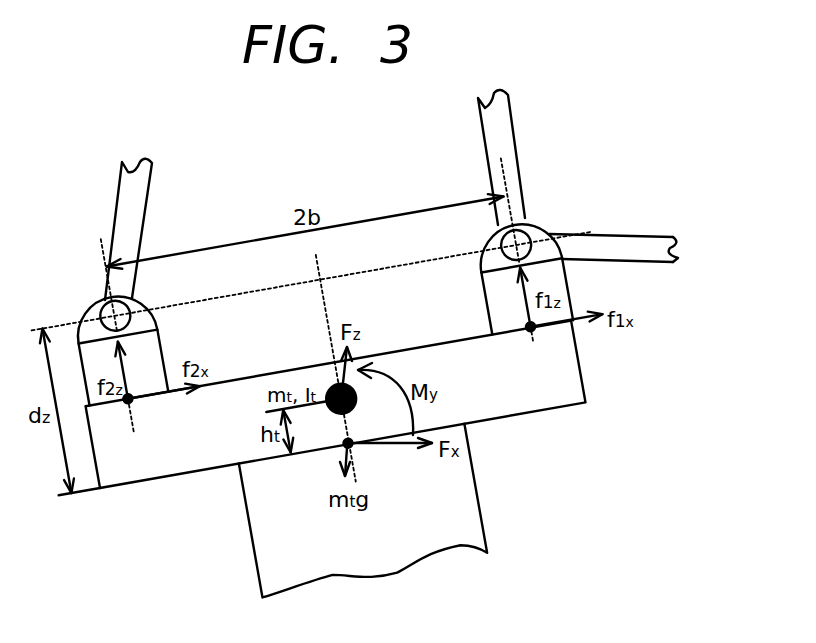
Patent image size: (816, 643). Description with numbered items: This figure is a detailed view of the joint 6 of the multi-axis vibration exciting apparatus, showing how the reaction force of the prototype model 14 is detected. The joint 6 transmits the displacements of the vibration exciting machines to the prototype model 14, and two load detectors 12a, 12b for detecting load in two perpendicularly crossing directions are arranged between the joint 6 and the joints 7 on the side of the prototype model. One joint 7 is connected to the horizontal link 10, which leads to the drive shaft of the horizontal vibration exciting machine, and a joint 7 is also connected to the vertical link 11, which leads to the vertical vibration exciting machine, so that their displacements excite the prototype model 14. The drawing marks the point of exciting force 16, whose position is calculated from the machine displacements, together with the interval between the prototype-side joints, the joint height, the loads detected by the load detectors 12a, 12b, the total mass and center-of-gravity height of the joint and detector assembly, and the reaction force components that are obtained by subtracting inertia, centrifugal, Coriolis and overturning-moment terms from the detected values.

The joint 6 is at (548, 395).
The joint 7 is at (102, 302).
The horizontal link 10 is at (640, 247).
The vertical link 11 is at (490, 136).
The load detector 12a is at (527, 231).
The load detector 12b is at (90, 361).
The prototype model 14 is at (455, 513).
The point of exciting force 16 is at (343, 444).